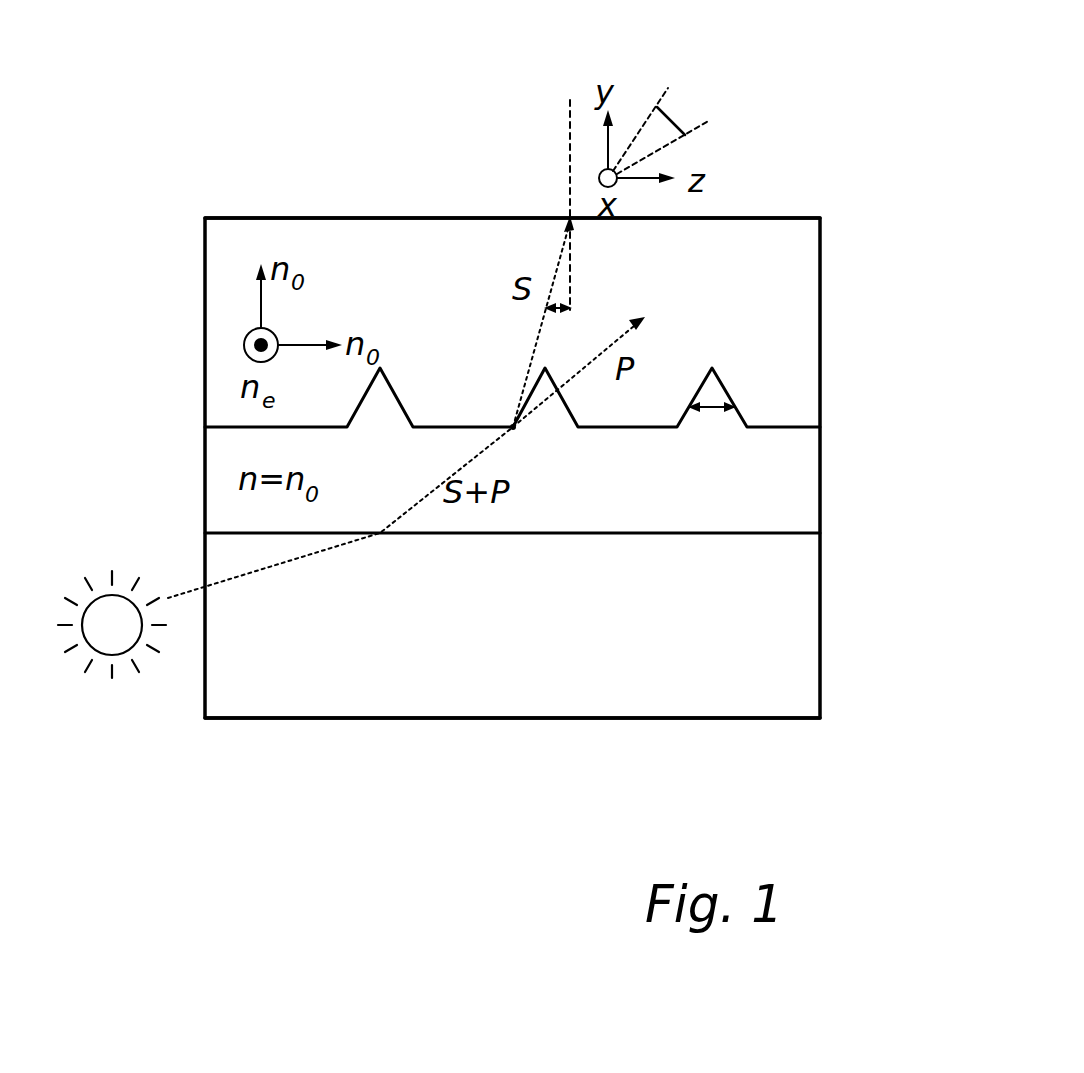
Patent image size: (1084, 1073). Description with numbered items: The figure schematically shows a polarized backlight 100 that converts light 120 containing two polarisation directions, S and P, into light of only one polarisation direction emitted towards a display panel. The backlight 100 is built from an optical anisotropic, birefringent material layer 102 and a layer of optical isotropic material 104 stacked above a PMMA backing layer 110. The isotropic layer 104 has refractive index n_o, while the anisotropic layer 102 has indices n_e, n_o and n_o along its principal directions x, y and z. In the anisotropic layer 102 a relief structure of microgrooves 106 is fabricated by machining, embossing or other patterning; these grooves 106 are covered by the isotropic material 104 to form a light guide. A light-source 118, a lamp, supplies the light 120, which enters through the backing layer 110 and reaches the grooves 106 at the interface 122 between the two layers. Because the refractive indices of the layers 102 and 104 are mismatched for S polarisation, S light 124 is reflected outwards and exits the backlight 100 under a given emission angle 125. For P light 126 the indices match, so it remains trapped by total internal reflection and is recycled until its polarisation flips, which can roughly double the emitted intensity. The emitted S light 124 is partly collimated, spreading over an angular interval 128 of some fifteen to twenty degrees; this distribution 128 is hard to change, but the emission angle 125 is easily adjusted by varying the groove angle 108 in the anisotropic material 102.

The polarized backlight 100 is at (417, 762).
The optical anisotropic material layer 102 is at (821, 295).
The layer of optical isotropic material 104 is at (821, 480).
The microgrooves 106 is at (727, 392).
The angle of the grooves 108 is at (712, 410).
The PMMA backing layer 110 is at (812, 622).
The light-source 118 is at (105, 655).
The light 120 is at (280, 565).
The incidence point on interface 122 is at (495, 438).
The S light 124 is at (532, 352).
The emission angle 125 is at (560, 314).
The P light 126 is at (648, 318).
The angular interval 128 is at (675, 118).